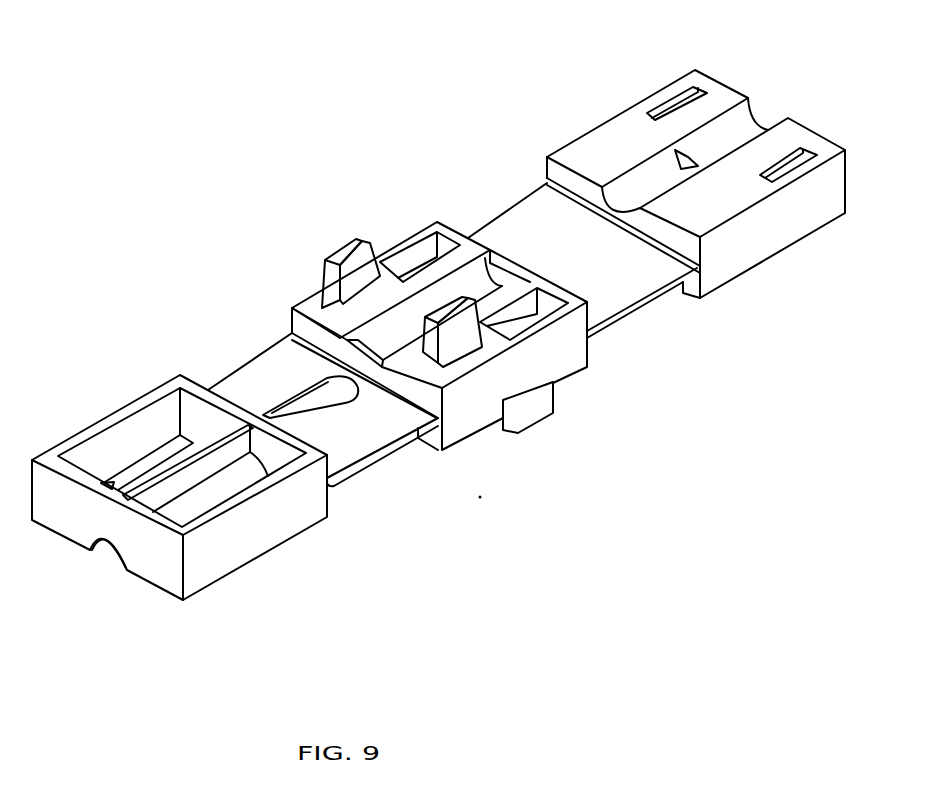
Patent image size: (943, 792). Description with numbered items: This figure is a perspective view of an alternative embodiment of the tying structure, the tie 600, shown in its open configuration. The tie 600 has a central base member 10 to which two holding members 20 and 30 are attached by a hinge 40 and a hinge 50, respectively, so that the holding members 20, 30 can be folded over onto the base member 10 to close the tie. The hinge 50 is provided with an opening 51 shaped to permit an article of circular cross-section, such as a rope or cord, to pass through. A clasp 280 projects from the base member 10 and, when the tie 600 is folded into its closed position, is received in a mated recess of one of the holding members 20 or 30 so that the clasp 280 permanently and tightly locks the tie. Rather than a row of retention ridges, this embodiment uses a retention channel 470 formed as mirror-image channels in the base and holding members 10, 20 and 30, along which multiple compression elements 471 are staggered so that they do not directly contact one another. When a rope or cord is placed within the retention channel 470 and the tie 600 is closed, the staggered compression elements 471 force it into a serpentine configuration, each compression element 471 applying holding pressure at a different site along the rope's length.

The base member 10 is at (512, 405).
The holding member 20 is at (764, 254).
The holding member 30 is at (258, 551).
The hinge 40 is at (632, 280).
The hinge 50 is at (377, 430).
The opening 51 is at (298, 418).
The clasp 280 is at (319, 277).
The retention channel 470 is at (113, 557).
The compression element 471 is at (688, 158).
The tie 600 is at (396, 223).